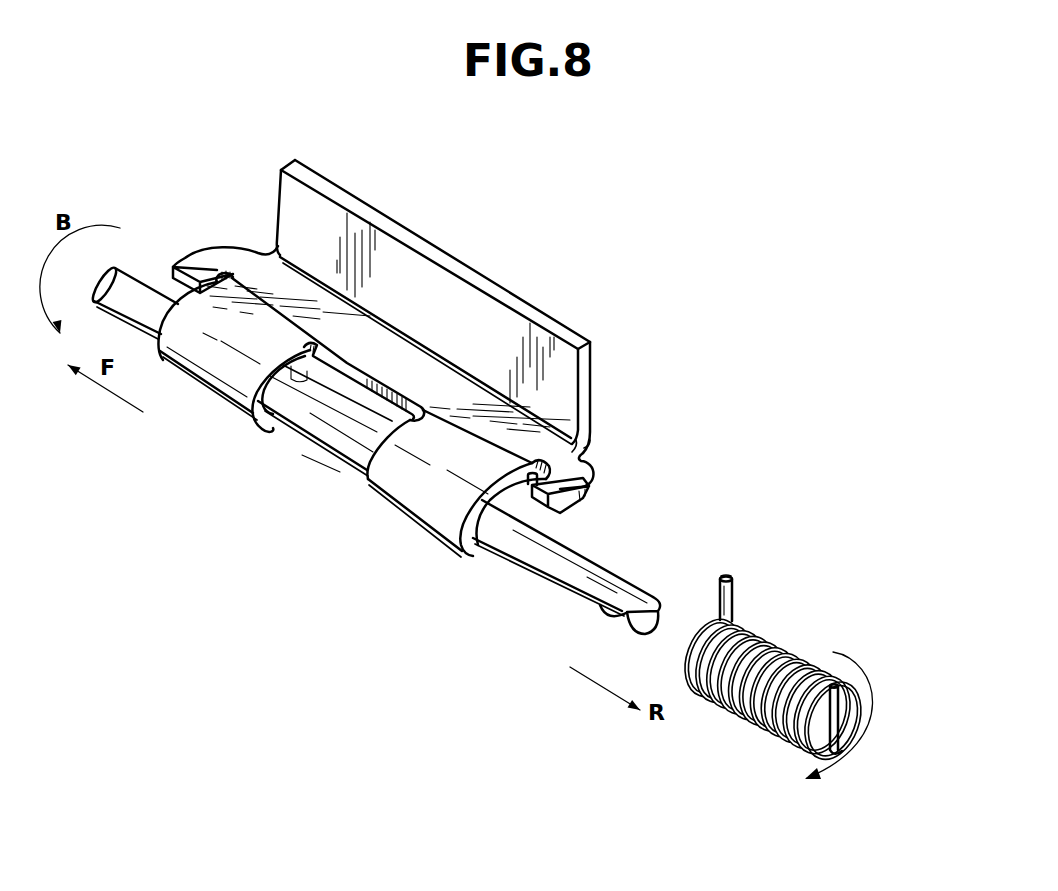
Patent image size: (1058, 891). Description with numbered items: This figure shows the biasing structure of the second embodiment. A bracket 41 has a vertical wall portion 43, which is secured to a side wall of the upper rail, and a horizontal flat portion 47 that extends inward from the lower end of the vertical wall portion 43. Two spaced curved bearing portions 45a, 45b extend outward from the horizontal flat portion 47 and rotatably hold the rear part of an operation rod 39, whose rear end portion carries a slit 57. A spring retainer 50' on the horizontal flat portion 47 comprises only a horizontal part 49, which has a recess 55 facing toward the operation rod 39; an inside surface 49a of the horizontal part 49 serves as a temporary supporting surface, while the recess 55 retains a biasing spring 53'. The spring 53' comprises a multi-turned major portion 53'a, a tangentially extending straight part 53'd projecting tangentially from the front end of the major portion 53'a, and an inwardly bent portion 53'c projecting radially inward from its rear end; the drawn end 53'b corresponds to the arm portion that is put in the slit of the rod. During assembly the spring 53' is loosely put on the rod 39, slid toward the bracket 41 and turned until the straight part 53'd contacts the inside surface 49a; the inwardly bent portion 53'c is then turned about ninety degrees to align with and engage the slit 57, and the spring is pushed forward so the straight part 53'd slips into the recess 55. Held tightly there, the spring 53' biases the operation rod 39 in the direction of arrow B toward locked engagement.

The operation rod 39 is at (374, 473).
The bracket 41 is at (436, 389).
The vertical wall portion 43 is at (503, 328).
The curved bearing portion 45a is at (212, 373).
The curved bearing portion 45b is at (420, 508).
The horizontal flat portion 47 is at (383, 350).
The horizontal part 49 is at (578, 463).
The inside surface 49a is at (548, 502).
The spring retainer 50' is at (642, 414).
The recess 55 is at (527, 477).
The slit 57 is at (622, 620).
The biasing spring 53' is at (810, 646).
The multi-turned major portion 53'a is at (773, 681).
The first end of spring 53'b is at (752, 532).
The inwardly bent portion 53'c is at (887, 718).
The tangentially extending straight part 53'd is at (787, 587).